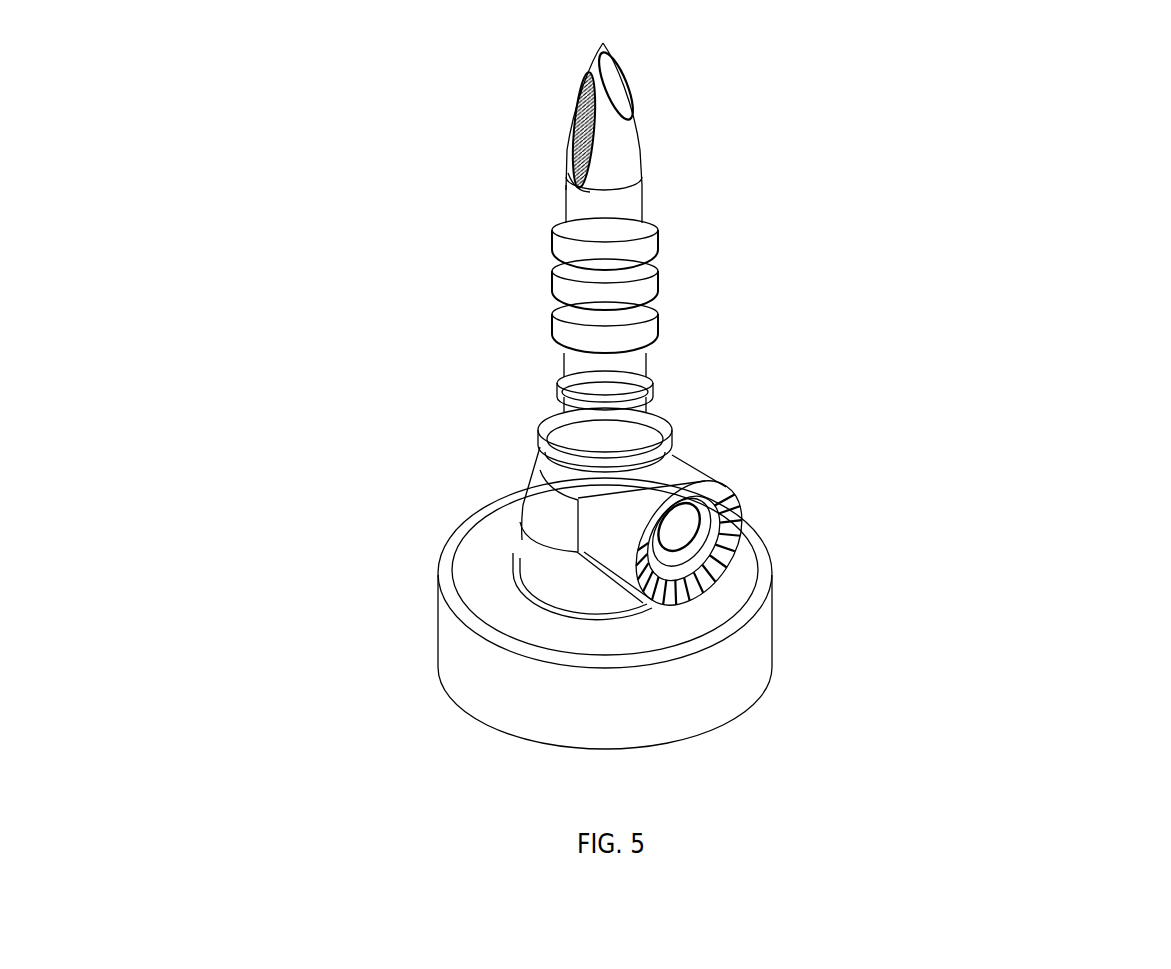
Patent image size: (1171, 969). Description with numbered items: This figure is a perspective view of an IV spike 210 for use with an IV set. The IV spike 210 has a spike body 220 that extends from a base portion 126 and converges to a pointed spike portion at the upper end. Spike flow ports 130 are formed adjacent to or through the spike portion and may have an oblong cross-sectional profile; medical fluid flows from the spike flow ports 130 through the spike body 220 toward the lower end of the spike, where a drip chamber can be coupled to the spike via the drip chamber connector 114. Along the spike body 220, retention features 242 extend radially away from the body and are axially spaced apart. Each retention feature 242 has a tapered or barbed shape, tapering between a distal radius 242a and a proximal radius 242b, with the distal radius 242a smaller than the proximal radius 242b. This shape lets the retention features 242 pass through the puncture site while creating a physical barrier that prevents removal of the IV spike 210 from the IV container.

The IV spike 210 is at (667, 396).
The spike flow ports 130 is at (617, 83).
The spike body 220 is at (643, 185).
The retention features 242 is at (648, 245).
The distal radius 242a is at (583, 286).
The proximal radius 242b is at (600, 313).
The base portion 126 is at (662, 427).
The drip chamber connector 114 is at (766, 650).